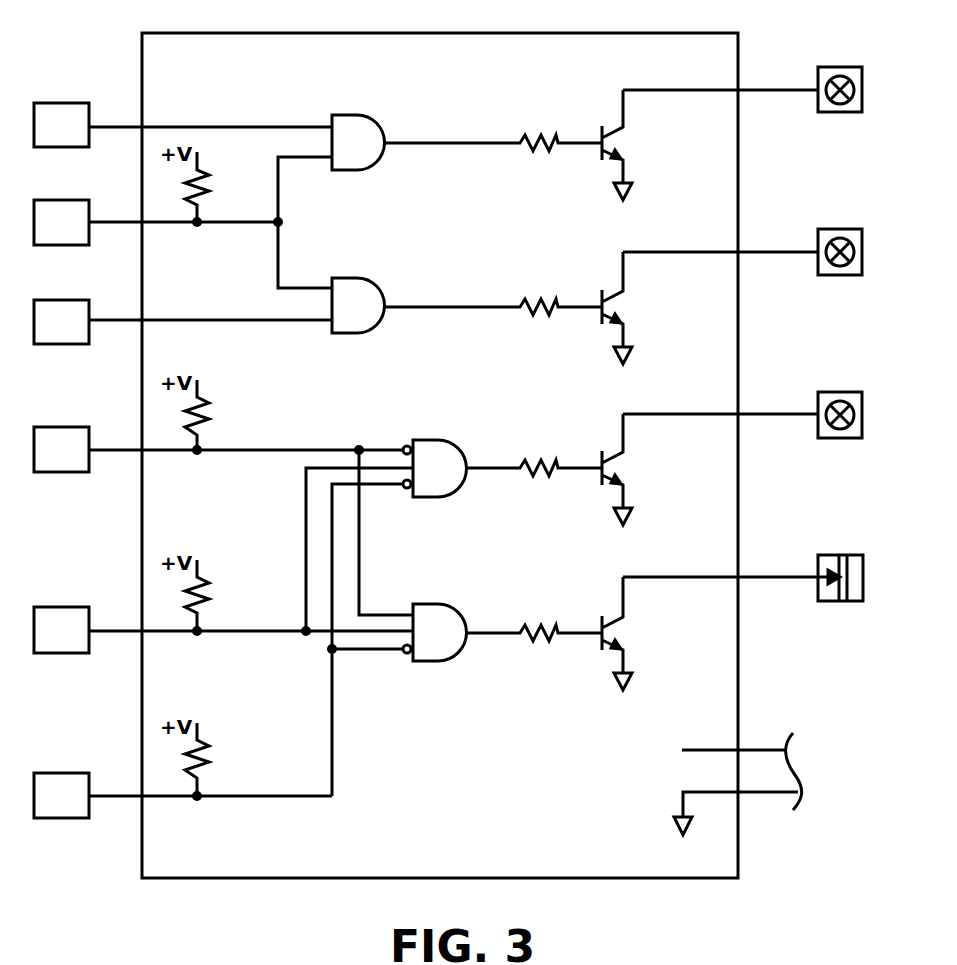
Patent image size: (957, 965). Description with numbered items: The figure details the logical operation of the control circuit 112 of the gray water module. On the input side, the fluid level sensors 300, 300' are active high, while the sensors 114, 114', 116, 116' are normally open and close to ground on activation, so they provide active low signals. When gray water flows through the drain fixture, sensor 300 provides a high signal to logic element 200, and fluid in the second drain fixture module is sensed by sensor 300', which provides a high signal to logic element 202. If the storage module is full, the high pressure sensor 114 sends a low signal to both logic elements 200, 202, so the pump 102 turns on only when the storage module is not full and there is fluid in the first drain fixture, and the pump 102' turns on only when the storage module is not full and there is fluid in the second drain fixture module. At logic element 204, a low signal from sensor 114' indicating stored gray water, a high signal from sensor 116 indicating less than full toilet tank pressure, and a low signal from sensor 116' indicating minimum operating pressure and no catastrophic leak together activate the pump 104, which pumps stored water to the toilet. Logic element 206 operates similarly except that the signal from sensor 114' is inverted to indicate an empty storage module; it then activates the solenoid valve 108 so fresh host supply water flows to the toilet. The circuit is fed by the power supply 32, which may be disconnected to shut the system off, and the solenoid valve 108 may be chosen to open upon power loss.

The control circuit 112 is at (540, 839).
The fluid level sensor 300 is at (61, 125).
The fluid level sensor 300' is at (61, 322).
The high pressure sensor 114 is at (61, 222).
The sensor 114' is at (61, 449).
The sensor 116 is at (61, 630).
The sensor 116' is at (61, 795).
The logic element 200 is at (337, 156).
The logic element 202 is at (337, 319).
The logic element 204 is at (418, 481).
The logic element 206 is at (418, 645).
The pump 102 is at (764, 69).
The pump 102' is at (767, 233).
The pump 104 is at (840, 392).
The solenoid valve 108 is at (840, 555).
The power supply 32 is at (796, 768).